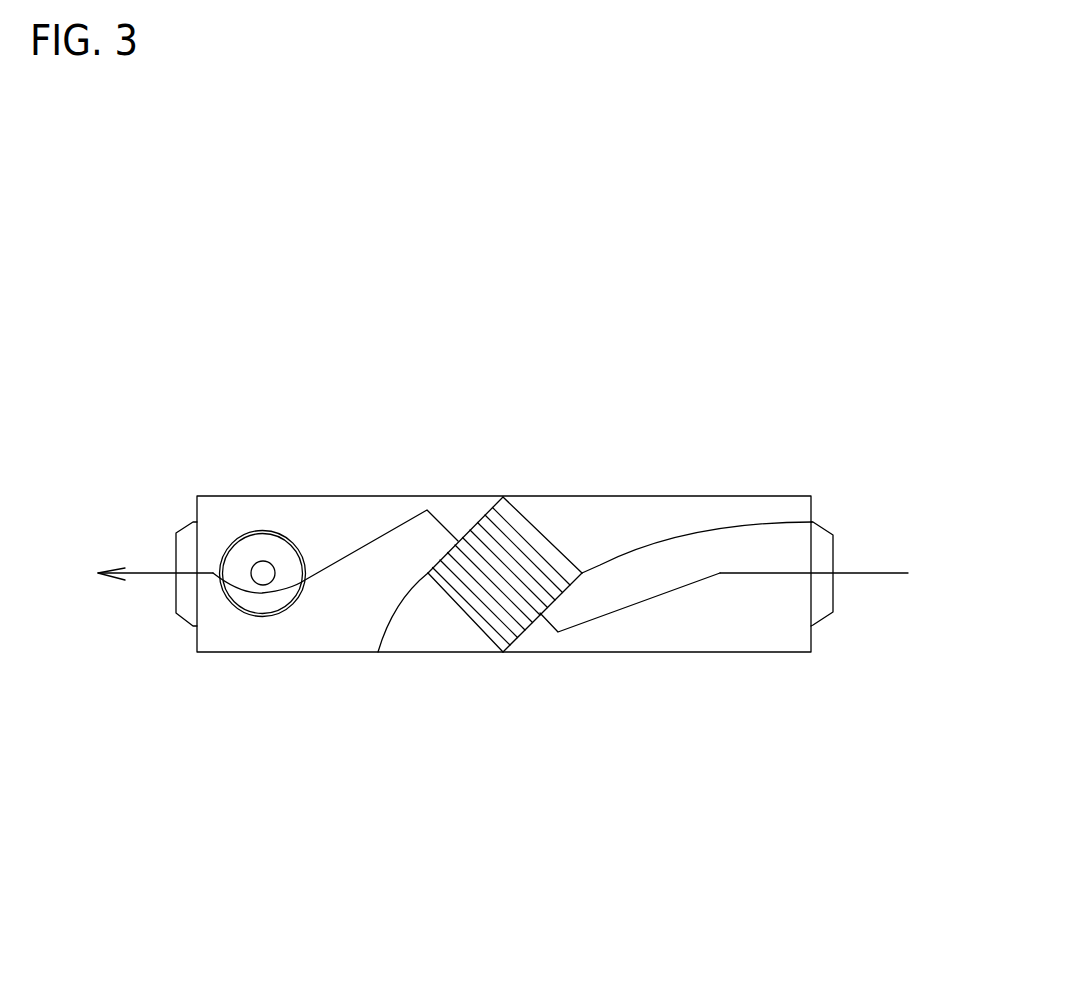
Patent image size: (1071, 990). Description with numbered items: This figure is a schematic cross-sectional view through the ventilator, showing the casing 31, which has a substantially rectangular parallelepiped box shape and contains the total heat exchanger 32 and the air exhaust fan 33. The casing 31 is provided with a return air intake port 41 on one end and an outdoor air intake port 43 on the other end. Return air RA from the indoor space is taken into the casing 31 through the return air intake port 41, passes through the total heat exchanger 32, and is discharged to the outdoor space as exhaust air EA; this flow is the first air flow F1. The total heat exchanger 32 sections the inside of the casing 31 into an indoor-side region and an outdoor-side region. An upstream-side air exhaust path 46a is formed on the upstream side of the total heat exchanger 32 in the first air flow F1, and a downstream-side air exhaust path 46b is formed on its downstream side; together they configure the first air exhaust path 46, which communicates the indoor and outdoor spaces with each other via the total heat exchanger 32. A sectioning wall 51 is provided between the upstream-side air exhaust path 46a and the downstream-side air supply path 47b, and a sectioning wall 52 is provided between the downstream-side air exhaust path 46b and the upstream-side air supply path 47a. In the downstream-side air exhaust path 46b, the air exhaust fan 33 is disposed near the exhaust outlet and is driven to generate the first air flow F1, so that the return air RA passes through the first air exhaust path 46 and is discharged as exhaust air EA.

The casing 31 is at (650, 496).
The total heat exchanger 32 is at (502, 565).
The air exhaust fan 33 is at (263, 530).
The return air intake port 41 is at (833, 590).
The outdoor air intake port 43 is at (176, 590).
The first air exhaust path 46 is at (512, 624).
The upstream-side air exhaust path 46a is at (676, 596).
The downstream-side air exhaust path 46b is at (366, 596).
The upstream-side air supply path 47a is at (428, 620).
The downstream-side air supply path 47b is at (580, 527).
The sectioning wall 51 is at (732, 526).
The sectioning wall 52 is at (386, 610).
The first air flow F1 is at (380, 535).
The exhaust air EA is at (136, 574).
The return air RA is at (833, 576).